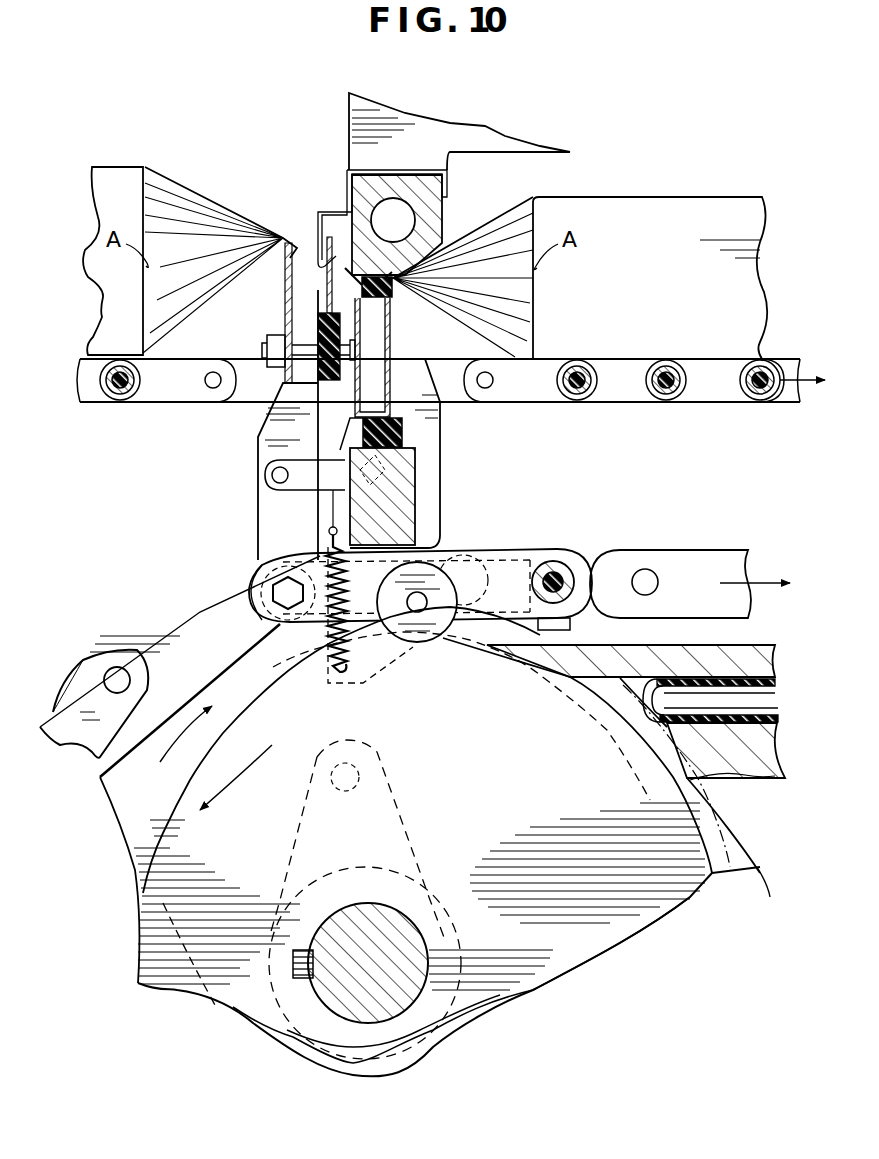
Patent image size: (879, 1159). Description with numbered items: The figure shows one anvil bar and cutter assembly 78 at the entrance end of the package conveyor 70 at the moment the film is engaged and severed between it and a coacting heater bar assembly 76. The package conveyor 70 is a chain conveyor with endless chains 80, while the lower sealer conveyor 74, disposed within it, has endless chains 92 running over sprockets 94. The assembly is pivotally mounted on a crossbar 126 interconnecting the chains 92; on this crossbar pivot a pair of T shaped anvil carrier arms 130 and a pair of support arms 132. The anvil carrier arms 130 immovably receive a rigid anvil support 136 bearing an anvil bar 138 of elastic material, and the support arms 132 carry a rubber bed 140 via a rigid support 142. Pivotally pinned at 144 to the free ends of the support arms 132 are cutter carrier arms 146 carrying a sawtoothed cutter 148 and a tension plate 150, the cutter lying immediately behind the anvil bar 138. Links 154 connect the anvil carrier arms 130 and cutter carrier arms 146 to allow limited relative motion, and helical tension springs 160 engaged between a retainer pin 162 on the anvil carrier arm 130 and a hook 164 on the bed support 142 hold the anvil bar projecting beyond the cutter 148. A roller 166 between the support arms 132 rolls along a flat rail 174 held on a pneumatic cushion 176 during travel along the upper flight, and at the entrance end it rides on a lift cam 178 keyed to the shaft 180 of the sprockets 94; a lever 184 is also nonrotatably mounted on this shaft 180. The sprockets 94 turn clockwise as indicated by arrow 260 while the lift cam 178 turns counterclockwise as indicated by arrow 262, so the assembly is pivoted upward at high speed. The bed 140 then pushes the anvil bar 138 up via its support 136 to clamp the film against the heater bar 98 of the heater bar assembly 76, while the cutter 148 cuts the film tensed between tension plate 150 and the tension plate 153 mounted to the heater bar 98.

The package conveyor 70 is at (451, 405).
The lower sealer conveyor 74 is at (730, 548).
The heater bar assembly 76 is at (500, 128).
The anvil bar and cutter assembly 78 is at (252, 428).
The endless chain 80 is at (626, 402).
The endless chain 92 is at (672, 560).
The sprocket 94 is at (757, 858).
The heater bar 98 is at (442, 210).
The crossbar 126 is at (551, 575).
The anvil carrier arm 130 is at (440, 488).
The support arm 132 is at (432, 550).
The anvil support 136 is at (388, 332).
The anvil bar 138 is at (392, 292).
The bed 140 is at (404, 433).
The rigid support 142 is at (415, 462).
The pivot pin 144 is at (284, 582).
The cutter carrier arm 146 is at (258, 500).
The sawtoothed cutter 148 is at (326, 289).
The tension plate 150 is at (283, 316).
The tension plate 153 is at (314, 214).
The link 154 is at (265, 472).
The helical tension spring 160 is at (283, 660).
The retainer pin 162 is at (343, 678).
The hook 164 is at (329, 530).
The roller 166 is at (428, 640).
The flat rail 174 is at (733, 645).
The pneumatic cushion 176 is at (770, 687).
The lift cam 178 is at (700, 820).
The shaft 180 is at (400, 1013).
The lever 184 is at (403, 806).
The arrow 260 is at (175, 728).
The arrow 262 is at (228, 782).